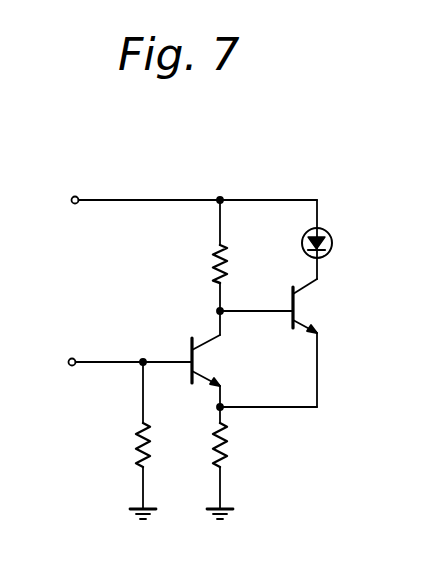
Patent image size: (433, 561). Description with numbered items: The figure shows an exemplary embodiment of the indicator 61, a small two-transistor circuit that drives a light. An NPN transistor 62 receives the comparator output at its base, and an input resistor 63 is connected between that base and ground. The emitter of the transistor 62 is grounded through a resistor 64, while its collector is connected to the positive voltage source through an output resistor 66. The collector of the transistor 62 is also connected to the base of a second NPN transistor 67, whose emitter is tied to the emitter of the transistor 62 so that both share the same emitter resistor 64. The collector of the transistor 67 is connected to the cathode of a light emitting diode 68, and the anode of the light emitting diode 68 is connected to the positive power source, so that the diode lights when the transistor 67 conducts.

The indicator 61 is at (170, 170).
The NPN transistor 62 is at (193, 336).
The input resistor 63 is at (133, 448).
The resistor 64 is at (226, 456).
The output resistor 66 is at (227, 276).
The NPN transistor 67 is at (306, 318).
The light emitting diode 68 is at (332, 246).